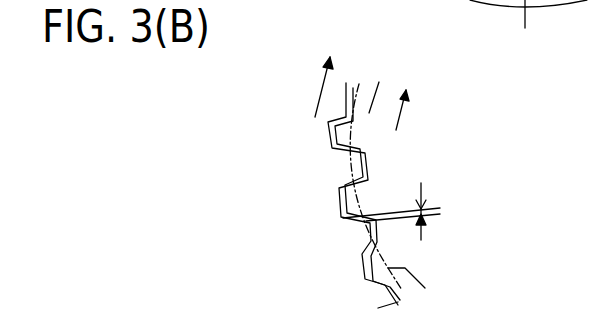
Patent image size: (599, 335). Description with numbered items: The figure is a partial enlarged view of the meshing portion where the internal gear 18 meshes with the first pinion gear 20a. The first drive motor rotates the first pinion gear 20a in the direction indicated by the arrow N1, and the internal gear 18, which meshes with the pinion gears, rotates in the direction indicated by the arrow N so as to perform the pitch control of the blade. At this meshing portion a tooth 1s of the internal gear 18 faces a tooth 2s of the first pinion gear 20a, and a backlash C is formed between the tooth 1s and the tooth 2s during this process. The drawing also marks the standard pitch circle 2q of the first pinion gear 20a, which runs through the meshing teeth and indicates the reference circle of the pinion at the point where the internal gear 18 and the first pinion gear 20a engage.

The tooth of the internal gear 1s is at (343, 167).
The tooth of the first pinion gear 2s is at (363, 197).
The standard pitch circle 2q is at (355, 93).
The internal gear 18 is at (348, 233).
The first pinion gear 20a is at (388, 155).
The backlash C is at (429, 224).
The rotation direction of the internal gear N is at (328, 73).
The rotation direction of the first pinion gear N1 is at (423, 103).